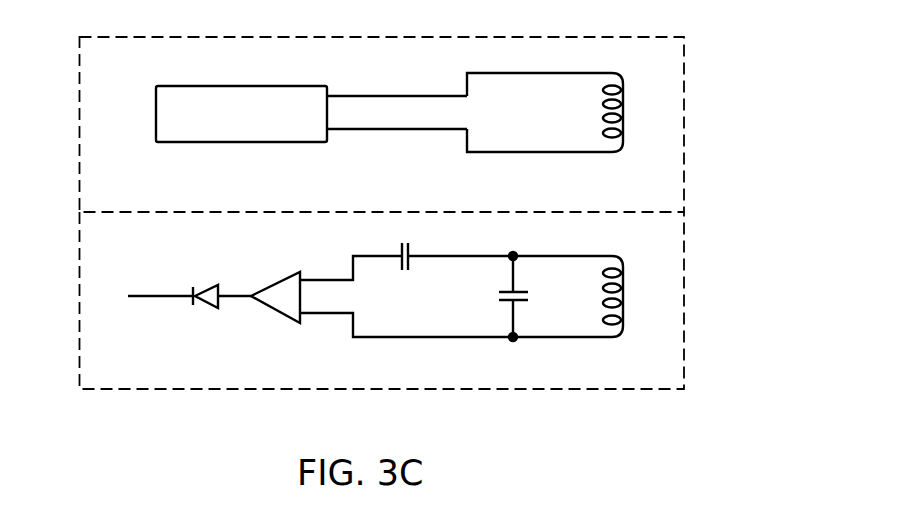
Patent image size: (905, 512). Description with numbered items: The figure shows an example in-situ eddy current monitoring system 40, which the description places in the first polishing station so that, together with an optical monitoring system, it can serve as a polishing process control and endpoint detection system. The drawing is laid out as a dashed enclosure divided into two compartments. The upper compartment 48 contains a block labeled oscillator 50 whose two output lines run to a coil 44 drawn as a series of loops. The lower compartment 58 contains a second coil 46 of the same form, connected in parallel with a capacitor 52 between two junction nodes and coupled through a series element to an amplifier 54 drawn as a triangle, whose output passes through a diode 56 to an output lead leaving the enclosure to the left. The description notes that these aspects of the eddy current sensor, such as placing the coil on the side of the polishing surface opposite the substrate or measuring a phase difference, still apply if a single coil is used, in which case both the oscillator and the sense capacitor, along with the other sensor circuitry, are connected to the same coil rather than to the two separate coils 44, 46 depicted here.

The eddy current monitoring system 40 is at (410, 213).
The transmit coil 44 is at (627, 110).
The receive coil 46 is at (626, 296).
The transmitter section 48 is at (79, 108).
The oscillator 50 is at (230, 86).
The capacitor 52 is at (505, 302).
The amplifier 54 is at (272, 312).
The diode 56 is at (205, 308).
The receiver section 58 is at (79, 288).